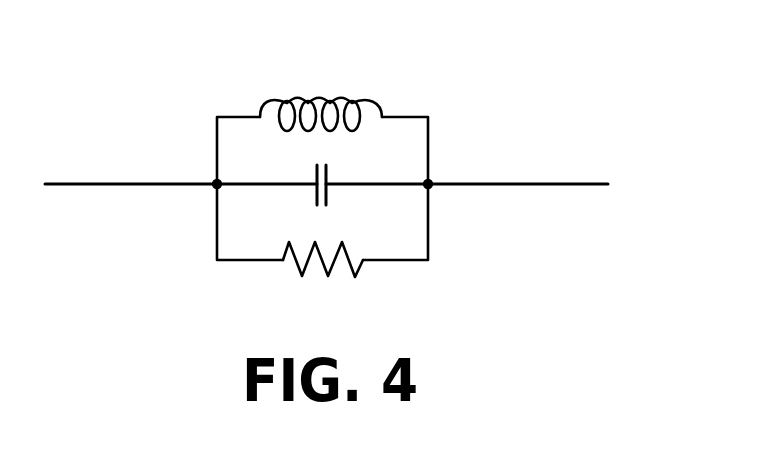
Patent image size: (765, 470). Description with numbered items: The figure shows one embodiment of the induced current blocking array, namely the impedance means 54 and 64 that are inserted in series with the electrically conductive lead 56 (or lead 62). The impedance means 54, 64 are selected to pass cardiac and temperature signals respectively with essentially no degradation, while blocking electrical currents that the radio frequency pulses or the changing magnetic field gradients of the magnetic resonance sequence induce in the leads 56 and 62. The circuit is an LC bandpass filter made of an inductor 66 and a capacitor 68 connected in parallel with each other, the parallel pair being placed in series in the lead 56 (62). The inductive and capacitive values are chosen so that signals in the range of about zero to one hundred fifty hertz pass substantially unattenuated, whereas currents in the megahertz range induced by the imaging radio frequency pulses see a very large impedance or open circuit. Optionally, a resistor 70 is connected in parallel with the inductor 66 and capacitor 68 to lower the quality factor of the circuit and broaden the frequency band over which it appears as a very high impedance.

The impedance means 54 is at (402, 179).
The impedance means 64 is at (402, 146).
The electrically conductive lead 56 is at (346, 219).
The lead 62 is at (503, 185).
The inductor 66 is at (318, 98).
The capacitor 68 is at (328, 172).
The resistor 70 is at (326, 268).